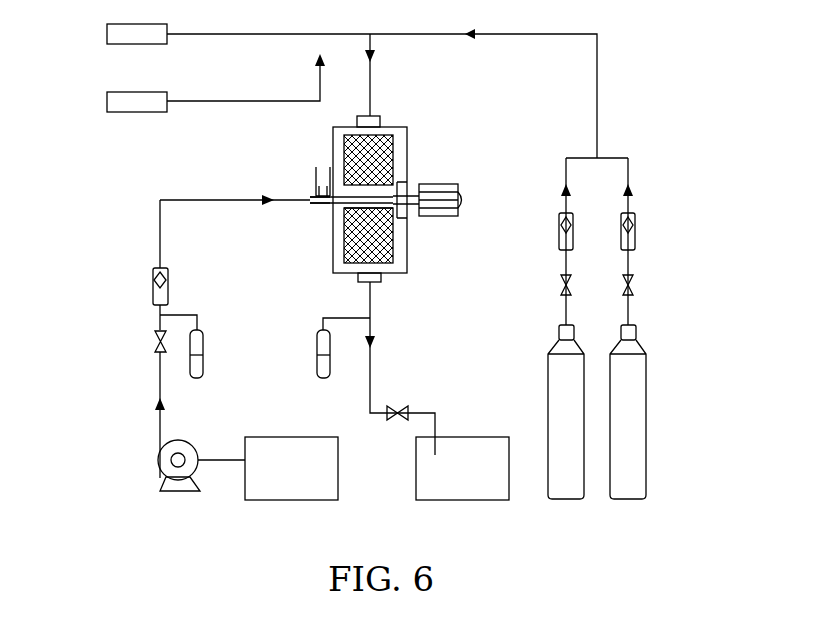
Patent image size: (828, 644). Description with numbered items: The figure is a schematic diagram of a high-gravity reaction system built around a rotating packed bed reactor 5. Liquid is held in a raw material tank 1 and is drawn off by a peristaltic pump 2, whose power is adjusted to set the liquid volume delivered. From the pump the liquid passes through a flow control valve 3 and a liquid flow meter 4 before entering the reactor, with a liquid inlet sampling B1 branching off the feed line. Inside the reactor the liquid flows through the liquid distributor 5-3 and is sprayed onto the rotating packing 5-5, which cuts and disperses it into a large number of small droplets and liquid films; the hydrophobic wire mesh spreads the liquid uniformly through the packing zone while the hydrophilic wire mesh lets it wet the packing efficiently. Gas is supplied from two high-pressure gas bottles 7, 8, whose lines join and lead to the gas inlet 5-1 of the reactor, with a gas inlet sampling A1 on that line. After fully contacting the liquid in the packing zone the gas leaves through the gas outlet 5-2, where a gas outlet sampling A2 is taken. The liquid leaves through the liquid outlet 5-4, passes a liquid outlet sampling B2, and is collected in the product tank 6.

The raw material tank 1 is at (255, 437).
The peristaltic pump 2 is at (165, 481).
The flow control valve 3 is at (155, 333).
The liquid flow meter 4 is at (158, 278).
The rotating packed bed reactor 5 is at (407, 145).
The gas inlet 5-1 is at (380, 117).
The gas outlet 5-2 is at (316, 188).
The liquid distributor 5-3 is at (317, 206).
The liquid outlet 5-4 is at (380, 283).
The packing 5-5 is at (388, 248).
The product tank 6 is at (416, 480).
The high-pressure gas bottle 7 is at (548, 400).
The high-pressure gas bottle 8 is at (646, 400).
The gas inlet sampling A1 is at (137, 34).
The gas outlet sampling A2 is at (137, 102).
The liquid inlet sampling B1 is at (196, 368).
The liquid outlet sampling B2 is at (322, 368).